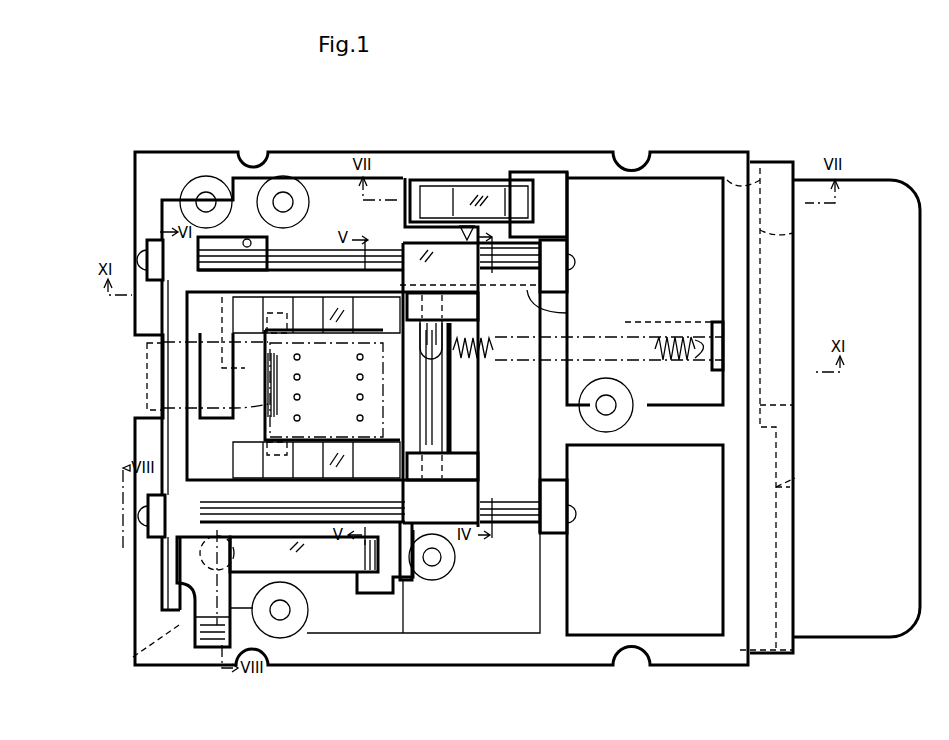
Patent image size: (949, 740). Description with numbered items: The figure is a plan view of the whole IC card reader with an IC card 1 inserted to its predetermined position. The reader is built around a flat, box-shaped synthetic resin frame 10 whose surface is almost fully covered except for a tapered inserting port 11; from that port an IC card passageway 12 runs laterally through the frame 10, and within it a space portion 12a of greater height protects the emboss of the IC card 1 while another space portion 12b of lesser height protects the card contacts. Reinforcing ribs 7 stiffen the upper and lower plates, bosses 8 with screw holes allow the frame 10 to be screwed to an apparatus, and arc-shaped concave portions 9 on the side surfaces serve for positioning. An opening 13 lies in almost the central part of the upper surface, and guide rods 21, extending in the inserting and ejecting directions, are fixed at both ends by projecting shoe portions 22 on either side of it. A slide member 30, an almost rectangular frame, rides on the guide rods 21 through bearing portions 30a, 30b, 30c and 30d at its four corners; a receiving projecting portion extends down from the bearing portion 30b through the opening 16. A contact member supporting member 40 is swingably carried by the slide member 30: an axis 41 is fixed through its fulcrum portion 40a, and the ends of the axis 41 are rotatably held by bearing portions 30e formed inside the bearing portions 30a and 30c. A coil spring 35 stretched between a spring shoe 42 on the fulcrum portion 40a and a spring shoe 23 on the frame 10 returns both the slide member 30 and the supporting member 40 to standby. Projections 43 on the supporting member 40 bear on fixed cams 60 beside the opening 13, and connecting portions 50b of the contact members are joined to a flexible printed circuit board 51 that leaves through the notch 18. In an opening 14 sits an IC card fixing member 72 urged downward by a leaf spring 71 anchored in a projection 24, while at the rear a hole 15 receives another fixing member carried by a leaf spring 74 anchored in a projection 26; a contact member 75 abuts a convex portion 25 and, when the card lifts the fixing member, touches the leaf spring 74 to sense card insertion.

The IC card 1 is at (920, 295).
The reinforcing ribs 7 is at (688, 447).
The bosses 8 is at (213, 185).
The arc-shaped concave portions 9 is at (256, 165).
The frame 10 is at (678, 195).
The inserting port 11 is at (793, 233).
The IC card passageway 12 is at (760, 180).
The space portion 12a is at (800, 476).
The space portion 12b is at (793, 407).
The opening 13 is at (567, 300).
The opening 14 is at (406, 192).
The hole 15 is at (133, 657).
The opening 16 is at (249, 240).
The notch 18 is at (163, 335).
The guide rods 21 is at (300, 256).
The projecting shoe portions 22 is at (152, 248).
The spring shoe 23 is at (714, 322).
The projection 24 is at (548, 185).
The convex portion 25 is at (170, 580).
The projection 26 is at (403, 600).
The slide member 30 is at (470, 398).
The bearing portion 30a is at (425, 248).
The bearing portion 30b is at (175, 254).
The bearing portion 30c is at (443, 512).
The bearing portion 30d is at (190, 526).
The bearing portions 30e is at (470, 307).
The coil spring 35 is at (679, 360).
The contact member supporting member 40 is at (374, 497).
The fulcrum portion 40a is at (440, 426).
The axis 41 is at (455, 452).
The spring shoe 42 is at (445, 337).
The projections 43 is at (267, 322).
The connecting portion 50b is at (358, 358).
The flexible printed circuit board 51 is at (146, 396).
The fixed cams 60 is at (340, 312).
The leaf spring 71 is at (490, 200).
The IC card fixing member 72 is at (438, 182).
The leaf spring 74 is at (323, 560).
The contact member 75 is at (205, 618).